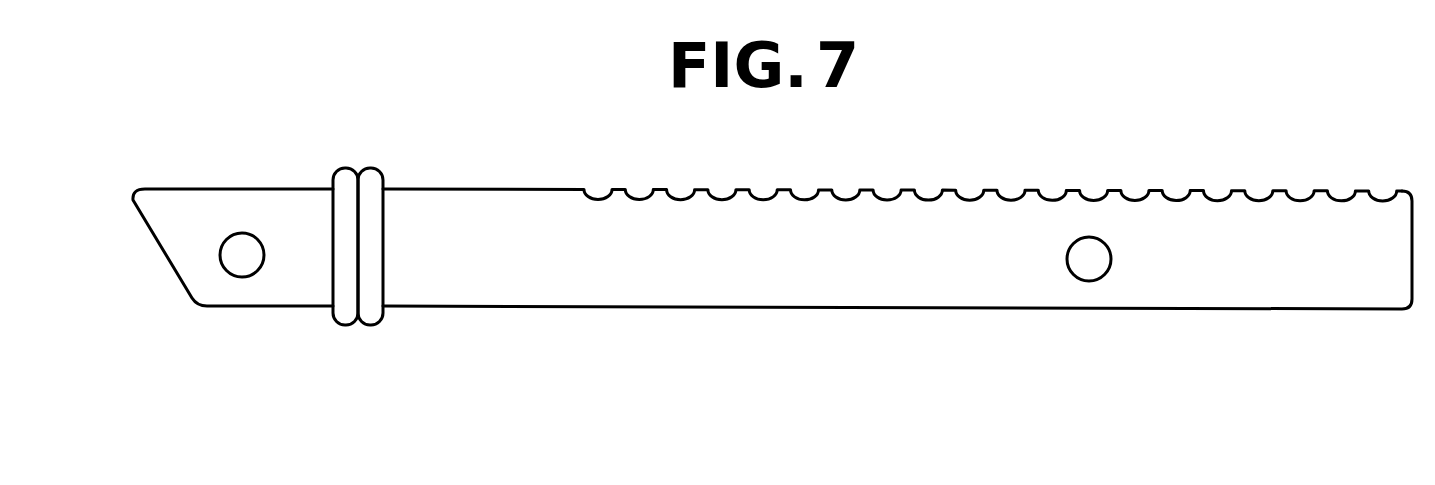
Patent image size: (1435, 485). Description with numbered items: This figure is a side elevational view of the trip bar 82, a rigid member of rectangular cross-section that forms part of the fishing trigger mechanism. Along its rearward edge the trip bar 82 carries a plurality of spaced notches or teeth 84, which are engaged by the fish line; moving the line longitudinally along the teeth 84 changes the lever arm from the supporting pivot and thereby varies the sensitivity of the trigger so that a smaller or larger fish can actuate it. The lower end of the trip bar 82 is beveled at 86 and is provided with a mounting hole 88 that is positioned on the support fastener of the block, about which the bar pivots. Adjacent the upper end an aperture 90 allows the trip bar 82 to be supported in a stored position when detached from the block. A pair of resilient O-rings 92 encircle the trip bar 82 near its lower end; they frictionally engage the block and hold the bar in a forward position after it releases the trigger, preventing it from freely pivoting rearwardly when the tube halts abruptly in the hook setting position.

The trip bar 82 is at (1292, 293).
The notches or teeth 84 is at (1175, 198).
The beveled lower end 86 is at (163, 255).
The mounting hole 88 is at (242, 277).
The aperture 90 is at (1088, 272).
The resilient O-rings 92 is at (372, 175).